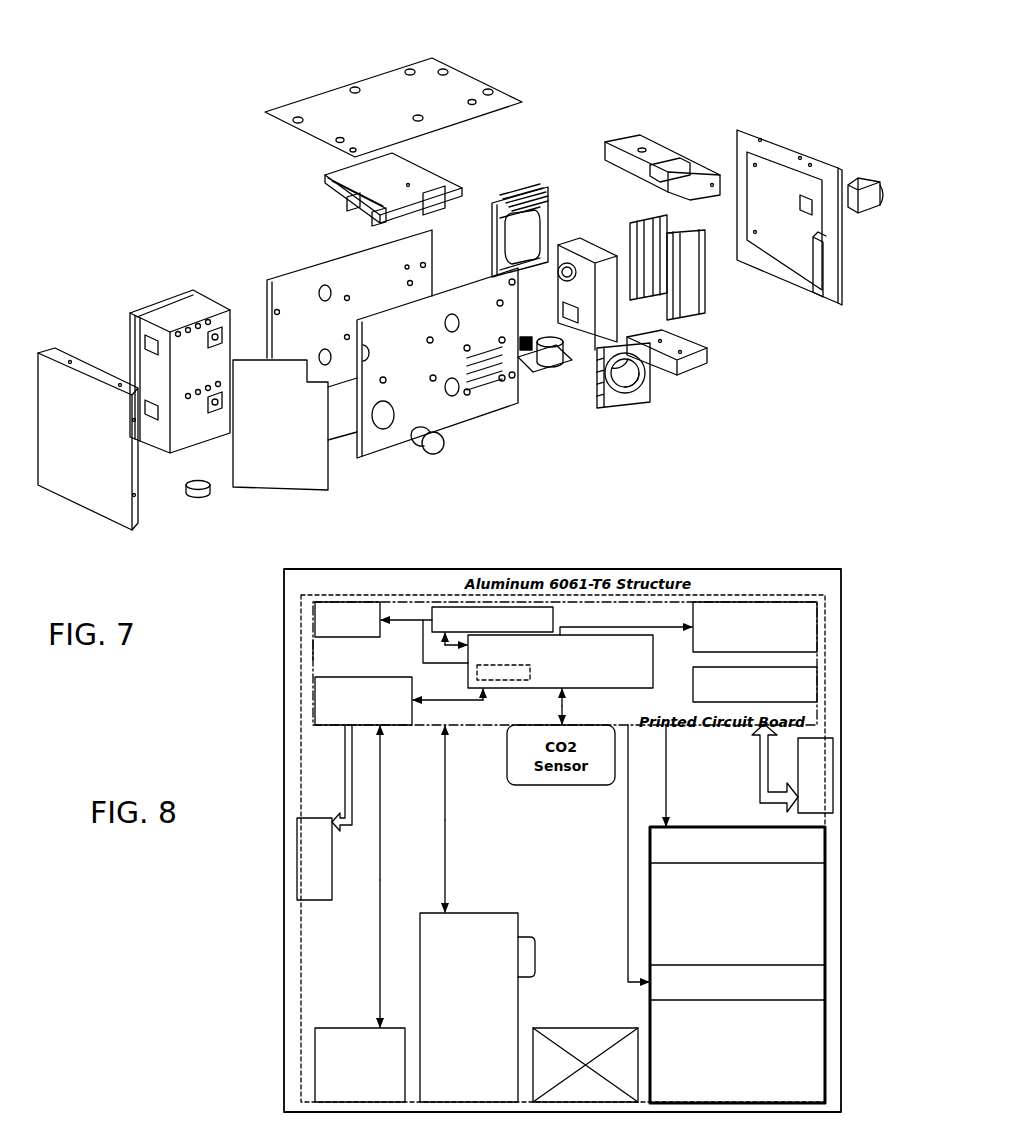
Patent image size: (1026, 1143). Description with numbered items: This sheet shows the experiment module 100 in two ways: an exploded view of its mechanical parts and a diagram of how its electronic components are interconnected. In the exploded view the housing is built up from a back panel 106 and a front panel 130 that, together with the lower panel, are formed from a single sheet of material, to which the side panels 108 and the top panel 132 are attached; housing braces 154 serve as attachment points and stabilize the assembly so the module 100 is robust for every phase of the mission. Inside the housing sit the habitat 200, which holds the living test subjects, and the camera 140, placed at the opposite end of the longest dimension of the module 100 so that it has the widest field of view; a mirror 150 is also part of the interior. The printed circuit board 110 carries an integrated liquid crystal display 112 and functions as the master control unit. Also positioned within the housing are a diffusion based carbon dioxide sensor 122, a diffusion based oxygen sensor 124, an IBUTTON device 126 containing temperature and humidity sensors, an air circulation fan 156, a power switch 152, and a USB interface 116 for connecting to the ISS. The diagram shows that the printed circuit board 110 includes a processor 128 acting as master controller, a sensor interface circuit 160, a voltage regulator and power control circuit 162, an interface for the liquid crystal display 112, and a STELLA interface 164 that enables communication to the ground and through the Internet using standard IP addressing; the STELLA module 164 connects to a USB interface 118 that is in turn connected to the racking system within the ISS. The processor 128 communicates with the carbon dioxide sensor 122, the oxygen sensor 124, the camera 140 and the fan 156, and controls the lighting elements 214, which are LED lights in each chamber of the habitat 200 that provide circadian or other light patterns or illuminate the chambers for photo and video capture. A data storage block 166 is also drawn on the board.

In FIG. 7, the module 100 is at (148, 151).
In FIG. 7, the back panel 106 is at (338, 271).
In FIG. 7, the side panel 108 is at (783, 200).
In FIG. 7, the printed circuit board 110 is at (375, 178).
In FIG. 8, the printed circuit board 110 is at (323, 645).
In FIG. 8, the liquid crystal display 112 is at (323, 620).
In FIG. 7, the USB interface 116 is at (865, 180).
In FIG. 8, the USB interface 116 is at (807, 748).
In FIG. 8, the USB interface 118 is at (308, 888).
In FIG. 7, the carbon dioxide sensor 122 is at (533, 230).
In FIG. 7, the oxygen sensor 124 is at (545, 370).
In FIG. 8, the oxygen sensor 124 is at (323, 1040).
In FIG. 7, the IBUTTON device 126 is at (198, 497).
In FIG. 8, the processor 128 is at (493, 677).
In FIG. 7, the front panel 130 is at (469, 402).
In FIG. 7, the top panel 132 is at (422, 100).
In FIG. 7, the camera 140 is at (580, 290).
In FIG. 8, the camera 140 is at (492, 1059).
In FIG. 7, the mirror 150 is at (300, 449).
In FIG. 7, the power switch 152 is at (426, 460).
In FIG. 7, the housing brace 154 is at (628, 145).
In FIG. 7, the air circulation fan 156 is at (612, 412).
In FIG. 8, the air circulation fan 156 is at (600, 1040).
In FIG. 8, the sensor interface circuit 160 is at (743, 606).
In FIG. 8, the voltage regulator and power control circuit 162 is at (808, 678).
In FIG. 8, the STELLA interface 164 is at (323, 710).
In FIG. 8, the data storage 166 is at (433, 612).
In FIG. 7, the habitat 200 is at (182, 312).
In FIG. 8, the lighting elements 214 is at (643, 842).